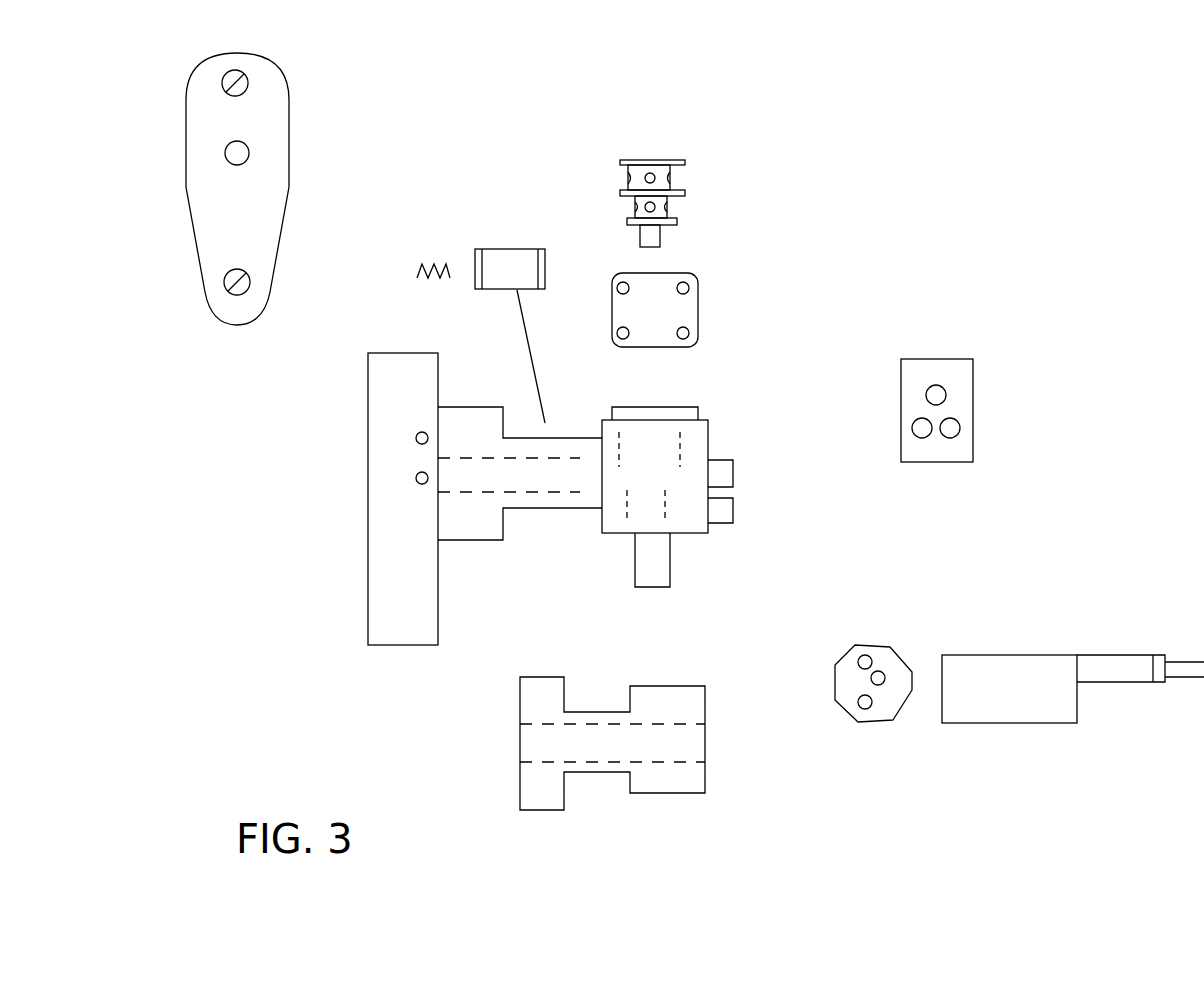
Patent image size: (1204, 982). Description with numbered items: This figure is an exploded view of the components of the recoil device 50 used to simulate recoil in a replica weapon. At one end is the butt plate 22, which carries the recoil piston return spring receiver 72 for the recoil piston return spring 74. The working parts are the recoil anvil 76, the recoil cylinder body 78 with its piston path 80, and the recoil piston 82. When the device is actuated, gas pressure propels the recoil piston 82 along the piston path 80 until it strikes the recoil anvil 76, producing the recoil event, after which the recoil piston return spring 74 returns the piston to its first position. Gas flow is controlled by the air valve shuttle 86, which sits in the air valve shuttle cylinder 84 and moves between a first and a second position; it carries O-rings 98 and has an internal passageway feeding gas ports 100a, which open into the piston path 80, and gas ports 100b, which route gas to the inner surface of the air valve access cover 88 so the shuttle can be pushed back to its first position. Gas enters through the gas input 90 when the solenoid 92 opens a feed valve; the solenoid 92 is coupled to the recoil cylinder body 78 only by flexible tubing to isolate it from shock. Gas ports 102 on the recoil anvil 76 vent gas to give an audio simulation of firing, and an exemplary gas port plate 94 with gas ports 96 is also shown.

The butt plate 22 is at (180, 245).
The recoil piston return spring receiver 72 is at (224, 154).
The recoil piston return spring 74 is at (428, 261).
The recoil piston 82 is at (504, 249).
The air valve shuttle 86 is at (688, 172).
The O-rings 98 is at (621, 222).
The gas ports 100a is at (675, 177).
The gas ports 100b is at (672, 207).
The air valve access cover 88 is at (708, 297).
The recoil device 50 is at (325, 667).
The recoil anvil 76 is at (362, 564).
The gas ports 102 is at (411, 442).
The recoil cylinder body 78 is at (481, 551).
The piston path 80 is at (551, 760).
The gas ports 96 is at (716, 496).
The air valve shuttle cylinder 84 is at (623, 457).
The gas input 90 is at (683, 571).
The gas port plate 94 is at (984, 383).
The solenoid 92 is at (998, 742).